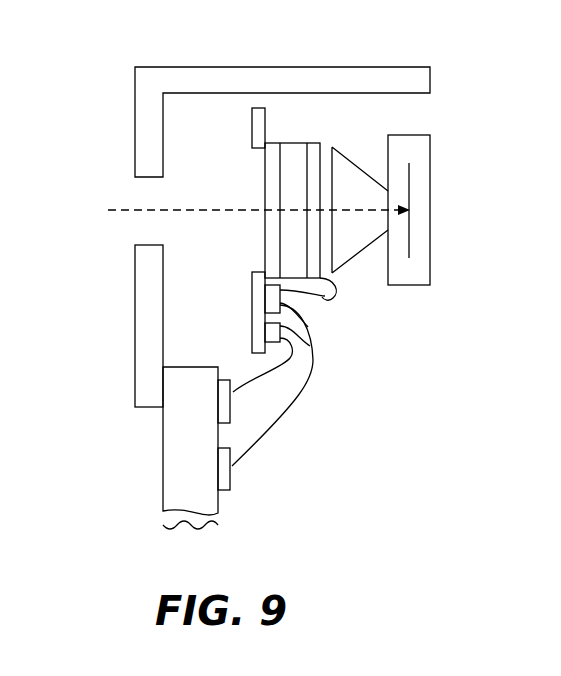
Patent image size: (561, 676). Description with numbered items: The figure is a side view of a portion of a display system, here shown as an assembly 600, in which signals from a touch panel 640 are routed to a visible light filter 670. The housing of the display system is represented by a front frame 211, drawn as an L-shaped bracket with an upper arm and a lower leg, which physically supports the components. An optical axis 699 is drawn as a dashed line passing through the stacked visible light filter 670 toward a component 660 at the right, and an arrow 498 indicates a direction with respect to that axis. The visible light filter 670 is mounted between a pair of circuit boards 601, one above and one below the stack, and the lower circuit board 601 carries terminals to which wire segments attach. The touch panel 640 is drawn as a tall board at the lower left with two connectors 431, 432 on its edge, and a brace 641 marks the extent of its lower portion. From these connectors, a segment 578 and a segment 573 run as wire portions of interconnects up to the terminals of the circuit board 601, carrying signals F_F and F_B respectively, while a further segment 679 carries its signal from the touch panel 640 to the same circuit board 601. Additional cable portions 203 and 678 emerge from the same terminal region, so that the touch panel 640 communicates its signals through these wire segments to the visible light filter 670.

The camera module assembly 600 is at (232, 38).
The front frame 211 is at (135, 110).
The viewing direction 498 is at (104, 179).
The optical axis 699 is at (188, 210).
The circuit board 601 is at (252, 128).
The visible light filter 670 is at (328, 137).
The image sensor 660 is at (437, 128).
The segment 679 is at (394, 298).
The cable 203 is at (333, 298).
The cable 678 is at (310, 346).
The segment 578 is at (258, 380).
The segment 573 is at (307, 390).
The connector 431 is at (231, 417).
The connector 432 is at (231, 485).
The touch panel 640 is at (245, 532).
The board length 641 is at (190, 543).